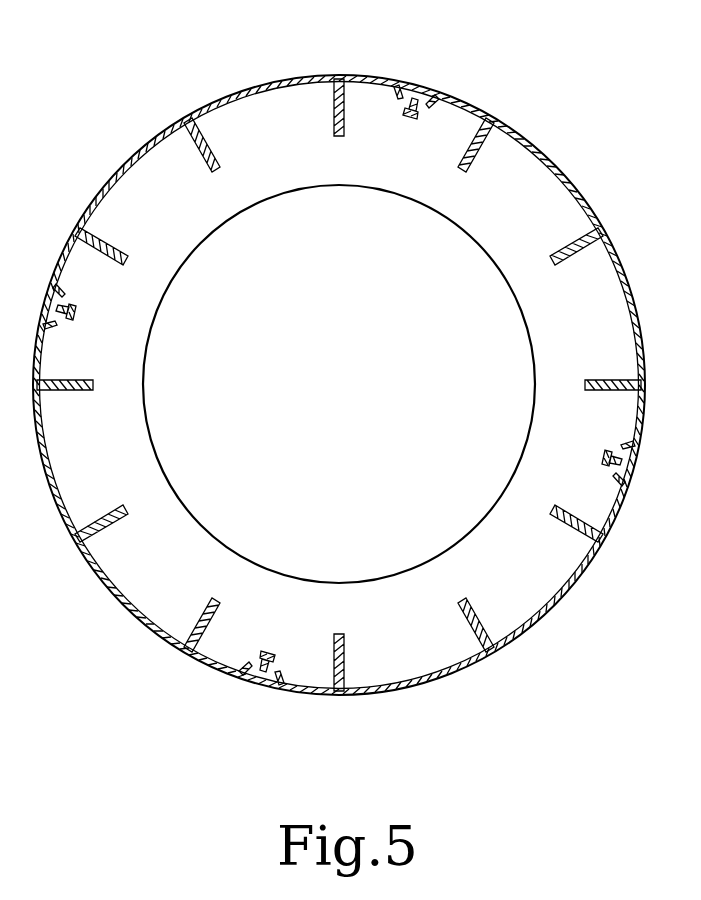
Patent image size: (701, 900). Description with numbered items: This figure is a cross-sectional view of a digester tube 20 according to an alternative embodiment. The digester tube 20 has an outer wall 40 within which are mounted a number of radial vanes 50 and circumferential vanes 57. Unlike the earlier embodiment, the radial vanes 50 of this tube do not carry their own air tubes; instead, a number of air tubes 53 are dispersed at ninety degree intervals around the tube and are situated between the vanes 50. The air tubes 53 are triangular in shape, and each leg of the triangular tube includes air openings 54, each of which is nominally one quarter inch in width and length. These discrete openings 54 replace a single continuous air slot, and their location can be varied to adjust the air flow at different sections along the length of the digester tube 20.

The digester tube 20 is at (474, 96).
The outer wall 40 is at (352, 72).
The radial vanes 50 is at (330, 97).
The air tubes 53 is at (416, 120).
The air openings 54 is at (397, 100).
The circumferential vanes 57 is at (592, 329).